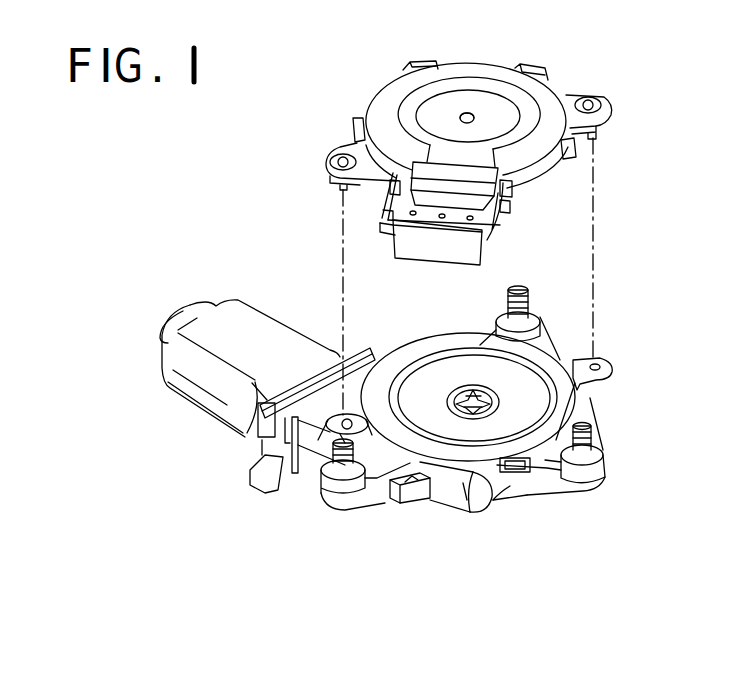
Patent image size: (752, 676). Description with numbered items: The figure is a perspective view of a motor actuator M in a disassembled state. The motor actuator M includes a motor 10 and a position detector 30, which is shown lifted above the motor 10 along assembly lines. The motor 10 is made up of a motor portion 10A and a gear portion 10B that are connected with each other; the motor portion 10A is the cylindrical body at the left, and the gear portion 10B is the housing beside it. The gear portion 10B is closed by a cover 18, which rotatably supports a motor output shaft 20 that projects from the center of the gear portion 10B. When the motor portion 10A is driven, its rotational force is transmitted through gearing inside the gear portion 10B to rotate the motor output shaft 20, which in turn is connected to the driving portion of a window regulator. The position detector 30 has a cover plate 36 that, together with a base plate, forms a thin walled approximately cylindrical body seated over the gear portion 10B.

The motor actuator M is at (177, 178).
The motor 10 is at (342, 553).
The motor portion 10A is at (215, 430).
The gear portion 10B is at (432, 507).
The cover 18 is at (513, 500).
The motor output shaft 20 is at (462, 392).
The position detector 30 is at (548, 53).
The cover plate 36 is at (388, 93).